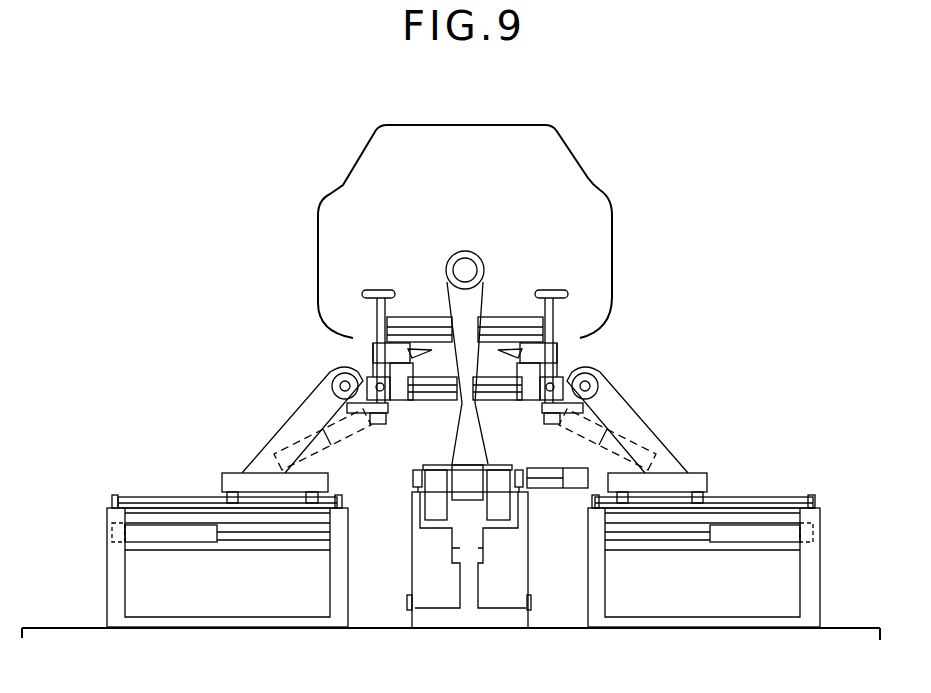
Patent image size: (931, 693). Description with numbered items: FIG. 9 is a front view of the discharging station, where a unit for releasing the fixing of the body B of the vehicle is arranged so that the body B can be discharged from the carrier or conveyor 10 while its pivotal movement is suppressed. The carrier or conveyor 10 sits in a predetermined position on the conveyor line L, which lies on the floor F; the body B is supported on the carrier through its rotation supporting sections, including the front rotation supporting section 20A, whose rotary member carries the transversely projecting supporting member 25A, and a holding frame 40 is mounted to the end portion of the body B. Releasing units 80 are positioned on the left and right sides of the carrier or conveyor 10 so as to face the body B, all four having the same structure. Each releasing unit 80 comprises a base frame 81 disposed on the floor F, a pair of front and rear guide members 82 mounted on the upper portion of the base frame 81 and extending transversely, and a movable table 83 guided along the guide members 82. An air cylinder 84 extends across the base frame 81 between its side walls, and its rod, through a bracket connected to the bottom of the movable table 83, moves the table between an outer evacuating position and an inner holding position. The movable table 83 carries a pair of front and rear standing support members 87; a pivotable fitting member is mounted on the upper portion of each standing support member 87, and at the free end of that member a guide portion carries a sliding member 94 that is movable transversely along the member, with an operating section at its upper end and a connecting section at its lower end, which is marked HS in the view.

The hemming station HS is at (735, 278).
The body of the vehicle B is at (592, 180).
The floor F is at (852, 627).
The holding frame 40 is at (500, 307).
The supporting member 25A is at (421, 315).
The front rotation supporting section 20A is at (572, 340).
The sliding member 94 is at (390, 404).
The standing support member 87 is at (302, 408).
The movable table 83 is at (233, 473).
The guide member 82 is at (167, 497).
The base frame 81 is at (100, 538).
The releasing unit 80 is at (237, 407).
The air cylinder 84 is at (178, 533).
The carrier or conveyor 10 is at (492, 463).
The conveyor line L is at (532, 546).